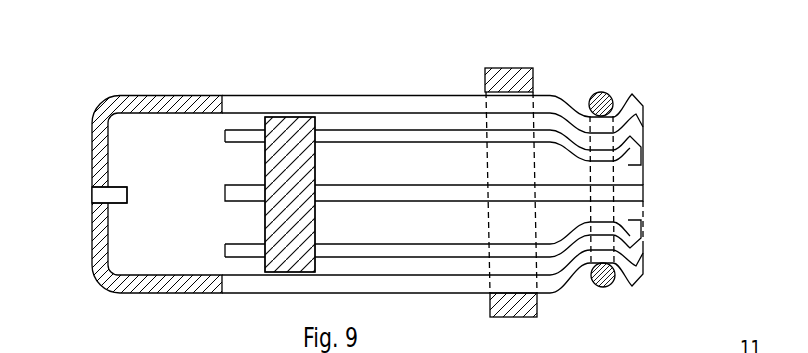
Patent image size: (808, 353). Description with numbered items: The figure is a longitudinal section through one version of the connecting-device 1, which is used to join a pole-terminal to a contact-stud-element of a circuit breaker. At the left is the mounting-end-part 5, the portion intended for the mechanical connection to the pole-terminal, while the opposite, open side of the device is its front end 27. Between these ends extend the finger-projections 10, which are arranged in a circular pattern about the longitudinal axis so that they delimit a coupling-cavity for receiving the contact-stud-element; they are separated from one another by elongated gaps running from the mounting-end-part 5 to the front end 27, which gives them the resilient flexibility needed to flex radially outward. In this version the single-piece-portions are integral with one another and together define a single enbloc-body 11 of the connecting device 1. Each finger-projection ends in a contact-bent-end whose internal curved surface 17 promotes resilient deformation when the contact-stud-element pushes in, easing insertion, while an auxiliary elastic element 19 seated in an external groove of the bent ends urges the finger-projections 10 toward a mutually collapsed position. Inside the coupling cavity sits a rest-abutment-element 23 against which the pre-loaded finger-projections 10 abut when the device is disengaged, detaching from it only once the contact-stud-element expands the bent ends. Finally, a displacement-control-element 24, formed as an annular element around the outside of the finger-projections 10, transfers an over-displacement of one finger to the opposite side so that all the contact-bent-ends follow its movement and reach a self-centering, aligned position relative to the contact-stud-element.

The connecting-device 1 is at (172, 104).
The mounting-end-part 5 is at (95, 140).
The finger-projections 10 is at (401, 97).
The enbloc-body 11 is at (714, 126).
The internal curved surface 17 is at (600, 245).
The auxiliary elastic element 19 is at (599, 93).
The rest-abutment-element 23 is at (285, 148).
The displacement-control-element 24 is at (513, 80).
The front end 27 is at (668, 167).